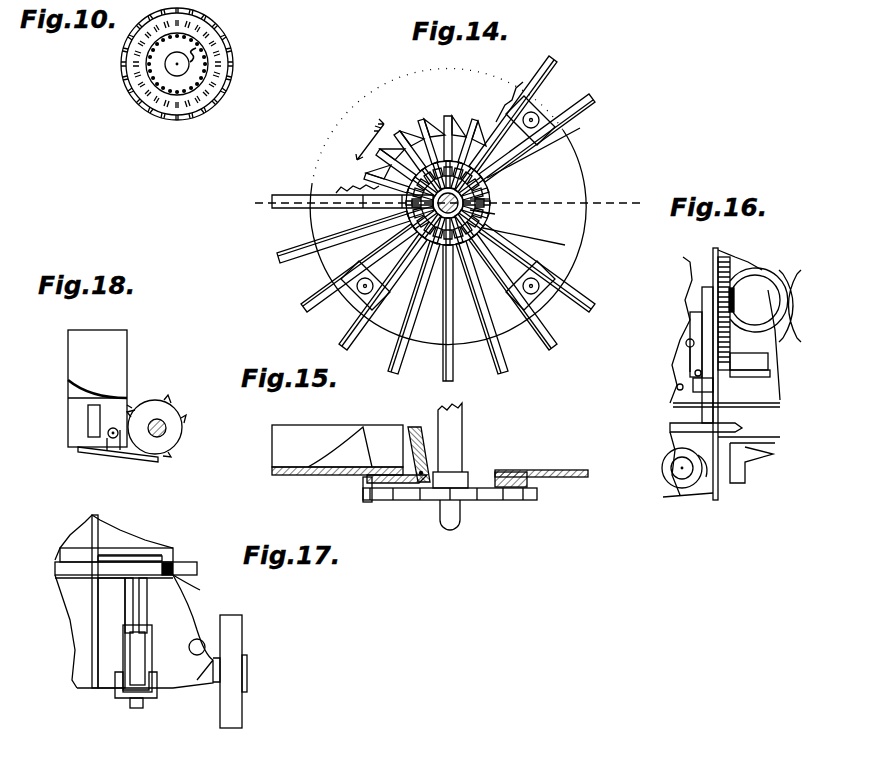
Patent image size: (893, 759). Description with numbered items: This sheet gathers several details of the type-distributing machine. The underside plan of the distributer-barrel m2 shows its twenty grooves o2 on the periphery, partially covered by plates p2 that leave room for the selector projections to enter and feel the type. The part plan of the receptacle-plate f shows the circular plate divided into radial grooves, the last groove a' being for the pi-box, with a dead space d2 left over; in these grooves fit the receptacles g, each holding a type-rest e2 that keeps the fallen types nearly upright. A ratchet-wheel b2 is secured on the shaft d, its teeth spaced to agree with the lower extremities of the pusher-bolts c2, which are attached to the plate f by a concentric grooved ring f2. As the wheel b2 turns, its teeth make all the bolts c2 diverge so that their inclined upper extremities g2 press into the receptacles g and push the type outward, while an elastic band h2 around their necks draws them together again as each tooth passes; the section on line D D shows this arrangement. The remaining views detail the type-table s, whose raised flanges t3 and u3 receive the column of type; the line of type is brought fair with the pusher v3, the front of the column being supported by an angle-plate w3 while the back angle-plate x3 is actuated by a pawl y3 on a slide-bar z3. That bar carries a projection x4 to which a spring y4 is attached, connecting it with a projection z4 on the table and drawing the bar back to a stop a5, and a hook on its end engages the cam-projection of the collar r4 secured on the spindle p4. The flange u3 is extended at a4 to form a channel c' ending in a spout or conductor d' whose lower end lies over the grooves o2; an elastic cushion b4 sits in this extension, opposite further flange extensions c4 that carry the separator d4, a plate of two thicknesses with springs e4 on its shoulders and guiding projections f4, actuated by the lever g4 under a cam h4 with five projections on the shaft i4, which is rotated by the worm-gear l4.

In FIG. 10, the distributer-barrel m2 is at (229, 54).
In FIG. 10, the grooves o2 is at (232, 71).
In FIG. 10, the plates p2 is at (227, 91).
In FIG. 14, the section line D D is at (435, 202).
In FIG. 14, the pi-box groove a' is at (466, 207).
In FIG. 14, the dead space d2 is at (460, 196).
In FIG. 14, the receptacle-plate f is at (436, 283).
In FIG. 15, the receptacle-plate f is at (430, 476).
In FIG. 14, the receptacles g is at (506, 357).
In FIG. 15, the receptacles g is at (337, 446).
In FIG. 14, the pusher-bolts c2 is at (465, 118).
In FIG. 15, the pusher-bolts c2 is at (367, 479).
In FIG. 14, the ratchet-wheel b2 is at (448, 118).
In FIG. 15, the ratchet-wheel b2 is at (450, 509).
In FIG. 14, the shaft d is at (481, 203).
In FIG. 15, the shaft d is at (455, 445).
In FIG. 14, the elastic band h2 is at (485, 190).
In FIG. 15, the elastic band h2 is at (420, 475).
In FIG. 14, the upper extremity of pusher-bolt g2 is at (492, 224).
In FIG. 15, the upper extremity of pusher-bolt g2 is at (435, 440).
In FIG. 16, the flange t3 is at (713, 250).
In FIG. 16, the back angle-plate x3 is at (760, 270).
In FIG. 16, the pawl y3 is at (734, 300).
In FIG. 16, the slide-bar z3 is at (706, 295).
In FIG. 16, the projection on table z4 is at (692, 340).
In FIG. 16, the spring y4 is at (686, 345).
In FIG. 16, the stop a5 is at (694, 374).
In FIG. 16, the projection on slide-bar x4 is at (713, 385).
In FIG. 16, the type-table s is at (726, 395).
In FIG. 16, the pusher-bar v3 is at (675, 427).
In FIG. 16, the angle-plate w3 is at (772, 434).
In FIG. 17, the angle-plate w3 is at (62, 580).
In FIG. 16, the collar r4 is at (668, 458).
In FIG. 16, the spindle p4 is at (678, 474).
In FIG. 18, the separator d4 is at (97, 388).
In FIG. 17, the separator d4 is at (152, 655).
In FIG. 18, the springs e4 is at (70, 385).
In FIG. 18, the projections f4 is at (88, 420).
In FIG. 18, the cam h4 is at (155, 427).
In FIG. 18, the shaft i4 is at (163, 423).
In FIG. 17, the shaft i4 is at (196, 640).
In FIG. 18, the lever g4 is at (118, 465).
In FIG. 17, the lever g4 is at (136, 701).
In FIG. 15, the type-rests e2 is at (340, 447).
In FIG. 15, the ring f2 is at (527, 482).
In FIG. 17, the flange u3 is at (100, 520).
In FIG. 17, the flange extension a4 is at (142, 553).
In FIG. 17, the elastic cushion b4 is at (150, 558).
In FIG. 17, the spout or conductor d' is at (140, 567).
In FIG. 17, the channel c' is at (196, 585).
In FIG. 17, the flange extensions c4 is at (128, 610).
In FIG. 17, the worm-gear l4 is at (240, 671).